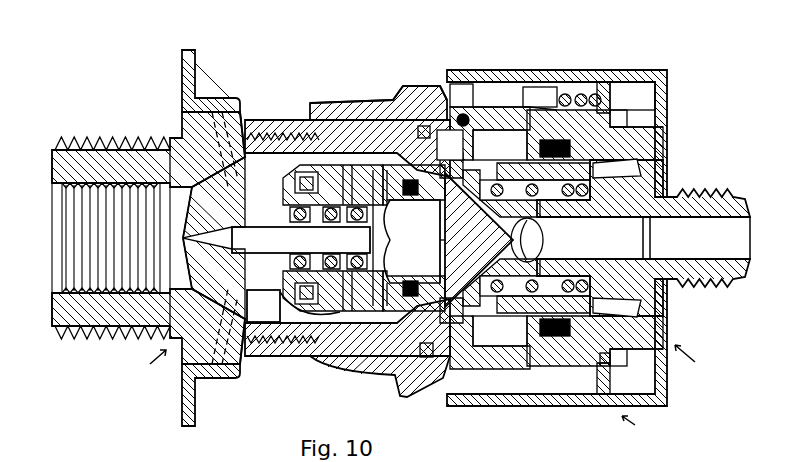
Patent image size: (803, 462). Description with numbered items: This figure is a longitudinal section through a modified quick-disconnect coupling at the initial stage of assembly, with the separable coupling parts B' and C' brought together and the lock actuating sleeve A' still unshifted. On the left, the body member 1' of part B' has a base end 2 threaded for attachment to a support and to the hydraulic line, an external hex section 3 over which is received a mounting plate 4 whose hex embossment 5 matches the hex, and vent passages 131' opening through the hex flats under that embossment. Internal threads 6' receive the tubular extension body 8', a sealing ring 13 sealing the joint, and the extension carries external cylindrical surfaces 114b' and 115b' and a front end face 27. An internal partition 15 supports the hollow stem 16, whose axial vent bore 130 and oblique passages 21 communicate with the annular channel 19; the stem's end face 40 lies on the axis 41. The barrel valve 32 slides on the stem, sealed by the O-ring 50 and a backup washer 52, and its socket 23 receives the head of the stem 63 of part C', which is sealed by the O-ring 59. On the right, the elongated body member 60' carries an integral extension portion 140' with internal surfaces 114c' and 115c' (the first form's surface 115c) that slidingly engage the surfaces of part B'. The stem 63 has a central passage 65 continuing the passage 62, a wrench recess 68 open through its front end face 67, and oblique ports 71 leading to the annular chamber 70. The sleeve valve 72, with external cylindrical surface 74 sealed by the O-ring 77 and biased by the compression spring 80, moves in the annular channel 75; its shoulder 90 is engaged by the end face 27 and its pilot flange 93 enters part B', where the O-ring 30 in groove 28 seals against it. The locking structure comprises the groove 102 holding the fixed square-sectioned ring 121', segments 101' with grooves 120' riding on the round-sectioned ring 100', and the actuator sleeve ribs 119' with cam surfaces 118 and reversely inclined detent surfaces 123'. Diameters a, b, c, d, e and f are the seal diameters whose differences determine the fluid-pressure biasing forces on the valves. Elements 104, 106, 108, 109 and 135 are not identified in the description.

The base end 2 is at (58, 143).
The external hex section 3 is at (183, 122).
The mounting plate 4 is at (182, 72).
The hex embossment 5 is at (235, 98).
The body member 1' is at (163, 238).
The vent passages 131' is at (209, 238).
The sealing ring 13 is at (250, 130).
The partition 15 is at (190, 214).
The hollow stem 16 is at (258, 214).
The oblique passages 21 is at (198, 264).
The axial bore 130 is at (266, 246).
The internal threads 6' is at (347, 205).
The extension body 8' is at (321, 227).
The external surface 114b' is at (290, 87).
The tubular extension portion 140' is at (378, 70).
The external cylindrical surface 115b' is at (351, 79).
The internal cylindrical surface 114c' is at (400, 60).
The locking groove 102 is at (396, 100).
The square sectioned ring 121' is at (433, 83).
The front end face 67 is at (360, 325).
The external radial shoulder 90 is at (430, 358).
The socket recess 23 is at (345, 165).
The barrel valve body 32 is at (346, 292).
The O-ring 50 is at (295, 180).
The diameter a is at (300, 238).
The diameter b is at (345, 238).
The annular channel 19 is at (270, 314).
The end face 40 is at (340, 310).
The axis 41 is at (388, 203).
The O-ring 59 is at (418, 182).
The pilot flange 93 is at (430, 306).
The diameter c is at (412, 241).
The axial recess 68 is at (434, 237).
The diameter d is at (440, 249).
The diameter e is at (479, 240).
The sleeve valve body 72 is at (463, 160).
The internal groove 28 is at (463, 320).
The oblique ports 71 is at (501, 238).
The annular chamber 70 is at (535, 190).
The compression spring 80 is at (514, 297).
The diameter f is at (535, 240).
The central fluid passage 65 is at (632, 250).
The tubular stem 63 is at (578, 218).
The annular channel 75 is at (636, 166).
The center passage 62 is at (708, 246).
The outer housing 104 is at (595, 75).
The chamber 106 is at (624, 93).
The pocket 108 is at (622, 113).
The seal 109 is at (618, 368).
The groove 135 is at (450, 88).
The internal cylindrical surface 115c' is at (490, 133).
The cylindrical internal surface 115c is at (508, 342).
The body member 60' is at (595, 238).
The external cylindrical surface 74 is at (550, 140).
The backup washer 52 is at (540, 333).
The O-ring 77 is at (578, 148).
The O-ring 30 is at (450, 144).
The grooves 120' is at (500, 145).
The front end face 27 is at (480, 340).
The cam surfaces 118 is at (525, 87).
The detent surfaces 123' is at (578, 69).
The sleeve ribs 119' is at (549, 60).
The steel ring 100' is at (501, 70).
The segments 101' is at (471, 70).
The coupling part B' is at (147, 366).
The coupling part C' is at (695, 359).
The lock actuating sleeve A' is at (637, 427).